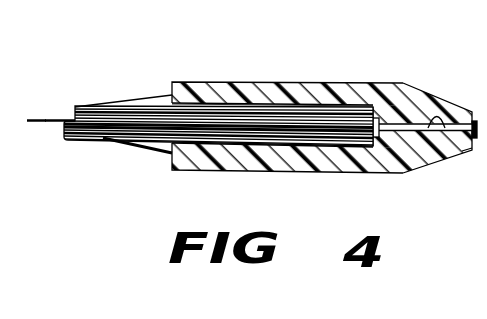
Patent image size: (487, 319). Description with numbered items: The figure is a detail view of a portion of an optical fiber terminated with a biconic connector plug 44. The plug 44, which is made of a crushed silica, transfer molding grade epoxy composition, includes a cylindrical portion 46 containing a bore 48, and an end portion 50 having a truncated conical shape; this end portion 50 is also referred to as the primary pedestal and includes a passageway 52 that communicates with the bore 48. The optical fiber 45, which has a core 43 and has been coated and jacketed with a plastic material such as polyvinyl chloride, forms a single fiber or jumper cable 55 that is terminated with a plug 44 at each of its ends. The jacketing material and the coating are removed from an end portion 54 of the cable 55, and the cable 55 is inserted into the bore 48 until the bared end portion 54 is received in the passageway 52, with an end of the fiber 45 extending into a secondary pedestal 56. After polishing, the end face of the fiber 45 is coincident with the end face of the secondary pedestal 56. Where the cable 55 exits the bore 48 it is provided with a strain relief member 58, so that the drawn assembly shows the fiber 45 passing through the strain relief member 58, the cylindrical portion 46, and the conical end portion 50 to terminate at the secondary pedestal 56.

The core 43 is at (35, 130).
The plug 44 is at (254, 172).
The optical fiber 45 is at (41, 117).
The cylindrical portion 46 is at (181, 83).
The bore 48 is at (305, 115).
The end portion 50 is at (423, 173).
The passageway 52 is at (462, 153).
The end portion of the single fiber cable 54 is at (388, 125).
The secondary pedestal 56 is at (479, 112).
The single fiber or jumper cable 55 is at (77, 141).
The strain relief member 58 is at (133, 90).